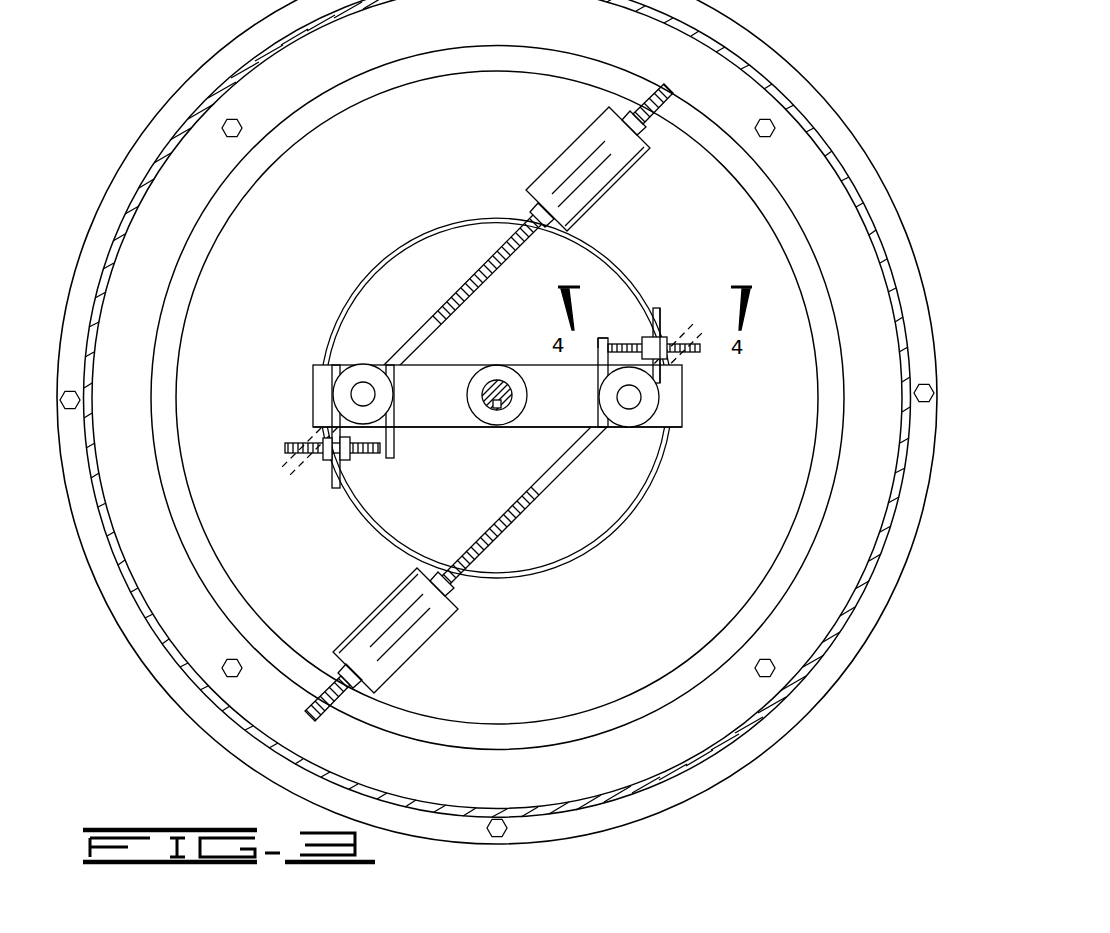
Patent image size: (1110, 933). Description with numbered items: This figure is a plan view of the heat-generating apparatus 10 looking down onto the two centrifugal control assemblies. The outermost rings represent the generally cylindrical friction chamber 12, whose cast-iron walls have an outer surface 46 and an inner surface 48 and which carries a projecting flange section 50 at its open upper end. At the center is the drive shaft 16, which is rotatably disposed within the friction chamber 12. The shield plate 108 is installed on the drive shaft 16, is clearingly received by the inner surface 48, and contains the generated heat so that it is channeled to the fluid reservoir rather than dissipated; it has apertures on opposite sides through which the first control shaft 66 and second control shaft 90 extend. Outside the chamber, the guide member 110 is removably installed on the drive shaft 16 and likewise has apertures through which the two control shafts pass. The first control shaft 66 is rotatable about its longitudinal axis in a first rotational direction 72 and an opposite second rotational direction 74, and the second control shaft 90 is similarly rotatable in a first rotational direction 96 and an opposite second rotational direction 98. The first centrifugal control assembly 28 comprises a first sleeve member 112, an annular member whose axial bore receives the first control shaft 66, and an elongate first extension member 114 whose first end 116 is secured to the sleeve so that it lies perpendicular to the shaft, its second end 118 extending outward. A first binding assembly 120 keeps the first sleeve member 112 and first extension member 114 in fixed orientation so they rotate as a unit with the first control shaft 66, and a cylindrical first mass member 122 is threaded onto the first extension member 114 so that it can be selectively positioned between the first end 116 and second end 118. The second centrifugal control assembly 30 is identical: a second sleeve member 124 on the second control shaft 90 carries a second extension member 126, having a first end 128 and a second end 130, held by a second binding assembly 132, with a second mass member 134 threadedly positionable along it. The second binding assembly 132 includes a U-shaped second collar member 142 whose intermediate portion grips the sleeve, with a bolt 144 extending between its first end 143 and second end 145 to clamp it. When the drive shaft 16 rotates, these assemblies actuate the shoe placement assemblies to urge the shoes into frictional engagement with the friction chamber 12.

The heat-generating apparatus 10 is at (827, 40).
The friction chamber 12 is at (612, 256).
The drive shaft 16 is at (503, 382).
The first centrifugal control assembly 28 is at (496, 185).
The second centrifugal control assembly 30 is at (490, 604).
The outer surface 46 is at (356, 282).
The inner surface 48 is at (365, 280).
The projecting flange section 50 is at (232, 367).
The first control shaft 66 is at (360, 390).
The first rotational direction 72 is at (422, 406).
The second rotational direction 74 is at (416, 376).
The second control shaft 90 is at (629, 398).
The first rotational direction 96 is at (583, 372).
The second rotational direction 98 is at (576, 409).
The shield plate 108 is at (446, 515).
The guide member 110 is at (522, 423).
The first sleeve member 112 is at (340, 383).
The first extension member 114 is at (455, 297).
The first end 116 is at (383, 360).
The second end 118 is at (673, 82).
The first binding assembly 120 is at (310, 481).
The first mass member 122 is at (566, 158).
The second sleeve member 124 is at (650, 407).
The second extension member 126 is at (534, 506).
The first end 128 is at (600, 430).
The second end 130 is at (313, 716).
The second binding assembly 132 is at (633, 318).
The second mass member 134 is at (406, 647).
The second collar member 142 is at (684, 330).
The first end 143 is at (602, 340).
The bolt 144 is at (702, 350).
The second end 145 is at (665, 311).